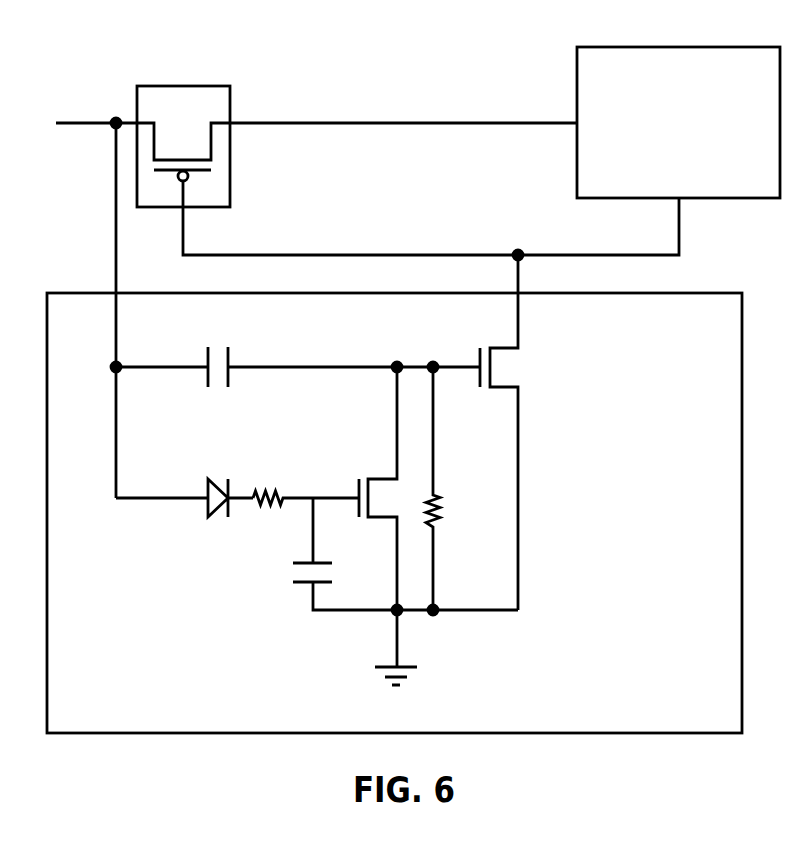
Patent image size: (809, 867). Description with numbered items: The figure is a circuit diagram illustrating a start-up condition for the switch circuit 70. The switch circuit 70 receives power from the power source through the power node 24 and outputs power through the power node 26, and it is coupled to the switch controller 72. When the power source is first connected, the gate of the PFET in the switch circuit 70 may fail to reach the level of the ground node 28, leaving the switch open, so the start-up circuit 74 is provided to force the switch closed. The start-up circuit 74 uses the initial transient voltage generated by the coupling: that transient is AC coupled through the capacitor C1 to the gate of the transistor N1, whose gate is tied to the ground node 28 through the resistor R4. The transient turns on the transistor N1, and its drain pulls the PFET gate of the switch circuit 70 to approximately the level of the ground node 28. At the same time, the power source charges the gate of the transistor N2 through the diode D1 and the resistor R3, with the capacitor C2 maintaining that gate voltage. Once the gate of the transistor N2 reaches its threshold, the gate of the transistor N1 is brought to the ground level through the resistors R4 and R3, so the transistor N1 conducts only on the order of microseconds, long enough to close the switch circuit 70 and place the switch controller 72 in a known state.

The power node 24 is at (100, 122).
The power node 26 is at (237, 122).
The switch circuit 70 is at (200, 85).
The switch controller 72 is at (666, 164).
The start-up circuit 74 is at (617, 716).
The ground node 28 is at (397, 620).
The capacitor C1 is at (295, 351).
The capacitor C2 is at (386, 556).
The diode D1 is at (184, 482).
The resistor R3 is at (306, 476).
The resistor R4 is at (458, 488).
The transistor N1 is at (502, 432).
The transistor N2 is at (385, 488).